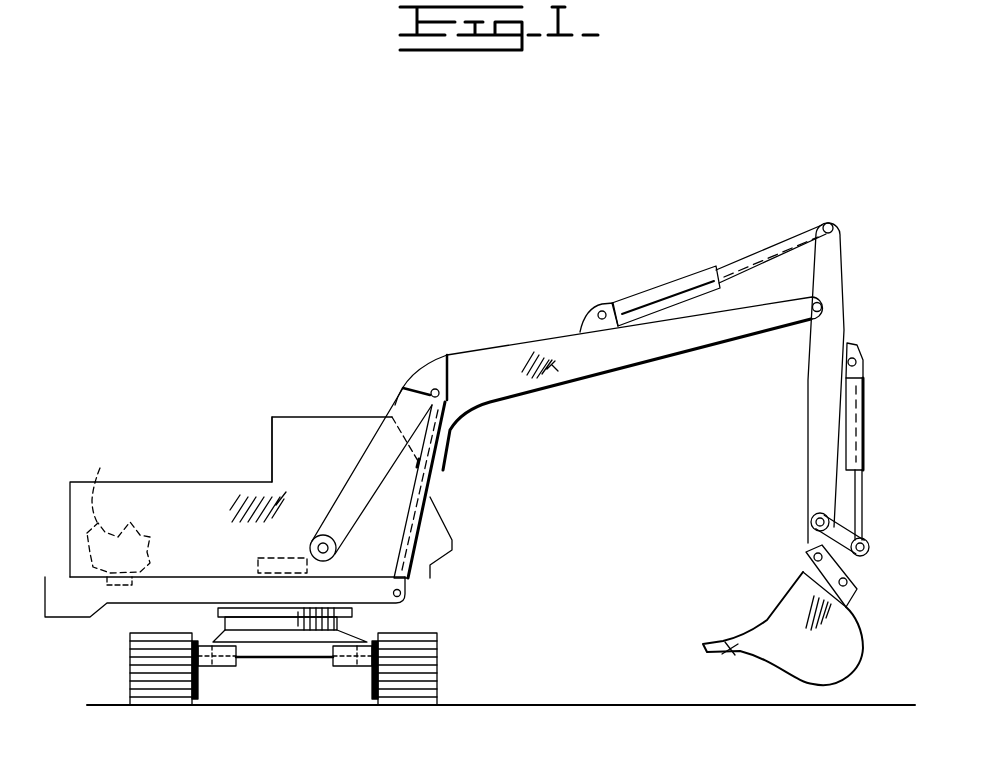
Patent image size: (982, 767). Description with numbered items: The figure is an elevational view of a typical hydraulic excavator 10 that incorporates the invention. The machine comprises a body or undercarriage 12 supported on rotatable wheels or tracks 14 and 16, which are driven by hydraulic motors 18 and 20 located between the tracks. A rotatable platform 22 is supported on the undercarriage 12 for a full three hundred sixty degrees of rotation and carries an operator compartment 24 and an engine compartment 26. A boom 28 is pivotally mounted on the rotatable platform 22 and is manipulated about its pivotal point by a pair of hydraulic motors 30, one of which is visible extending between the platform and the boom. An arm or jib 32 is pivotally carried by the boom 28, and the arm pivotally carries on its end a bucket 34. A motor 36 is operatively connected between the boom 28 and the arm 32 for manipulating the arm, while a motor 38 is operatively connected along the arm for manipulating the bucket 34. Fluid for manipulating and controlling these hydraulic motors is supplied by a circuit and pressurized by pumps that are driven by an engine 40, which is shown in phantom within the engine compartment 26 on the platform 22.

The hydraulic excavator 10 is at (205, 352).
The body or undercarriage 12 is at (272, 645).
The track 14 is at (440, 658).
The track 16 is at (135, 670).
The hydraulic motor 18 is at (222, 665).
The hydraulic motor 20 is at (357, 665).
The rotatable platform 22 is at (93, 608).
The operator compartment 24 is at (333, 393).
The engine compartment 26 is at (185, 497).
The boom 28 is at (621, 358).
The hydraulic motor 30 is at (441, 470).
The arm or jib 32 is at (808, 408).
The bucket 34 is at (727, 648).
The motor 36 is at (686, 280).
The motor 38 is at (850, 448).
The engine 40 is at (100, 466).